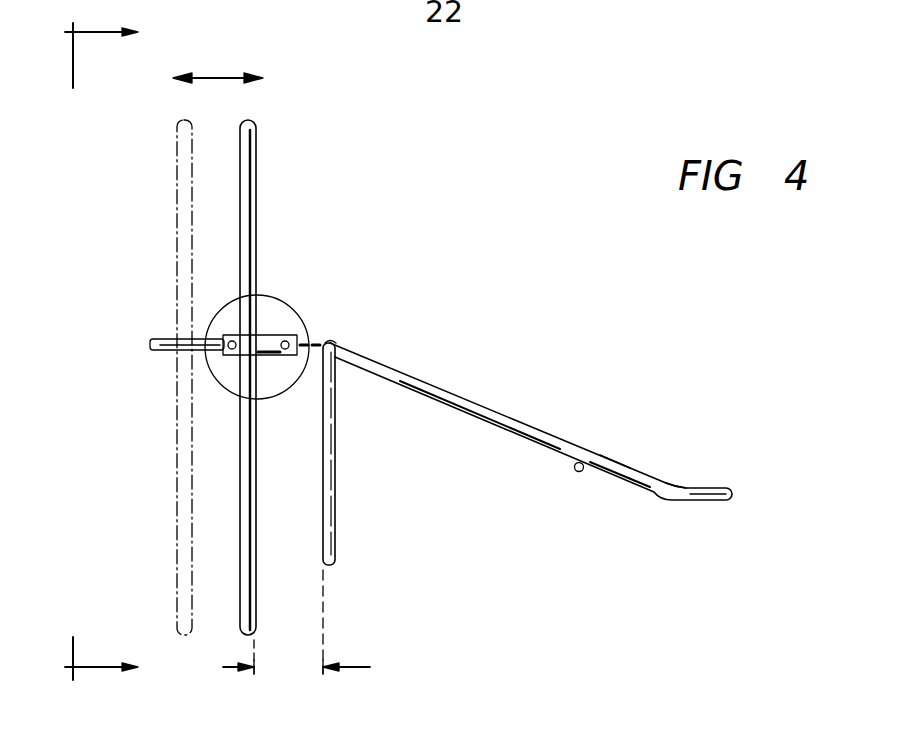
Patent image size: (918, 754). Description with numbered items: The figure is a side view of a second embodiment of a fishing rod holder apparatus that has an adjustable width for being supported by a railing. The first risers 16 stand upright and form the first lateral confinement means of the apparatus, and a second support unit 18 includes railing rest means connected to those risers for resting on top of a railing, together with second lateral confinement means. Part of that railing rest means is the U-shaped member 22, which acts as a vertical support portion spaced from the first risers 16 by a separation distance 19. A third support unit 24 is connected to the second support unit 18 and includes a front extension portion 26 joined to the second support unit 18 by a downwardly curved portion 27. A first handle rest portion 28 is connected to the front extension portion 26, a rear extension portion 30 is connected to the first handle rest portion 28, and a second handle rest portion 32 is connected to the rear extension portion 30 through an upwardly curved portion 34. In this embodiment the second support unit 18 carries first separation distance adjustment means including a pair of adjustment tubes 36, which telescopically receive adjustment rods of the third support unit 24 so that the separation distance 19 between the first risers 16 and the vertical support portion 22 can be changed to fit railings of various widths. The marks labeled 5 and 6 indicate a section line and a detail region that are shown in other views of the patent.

The section line 5- 5 is at (95, 353).
The detail circle for FIG. 6 is at (300, 312).
The first risers 16 is at (250, 200).
The second support unit 18 is at (276, 376).
The separation distance 19 is at (315, 628).
The U-shaped member 22 is at (334, 562).
The third support unit 24 is at (569, 429).
The front extension portion 26 is at (528, 397).
The downwardly curved portion 27 is at (337, 343).
The first handle rest portion 28 is at (574, 472).
The rear extension portion 30 is at (615, 461).
The second handle rest portion 32 is at (735, 494).
The upwardly curved portion 34 is at (675, 487).
The adjustment tubes 36 is at (266, 336).